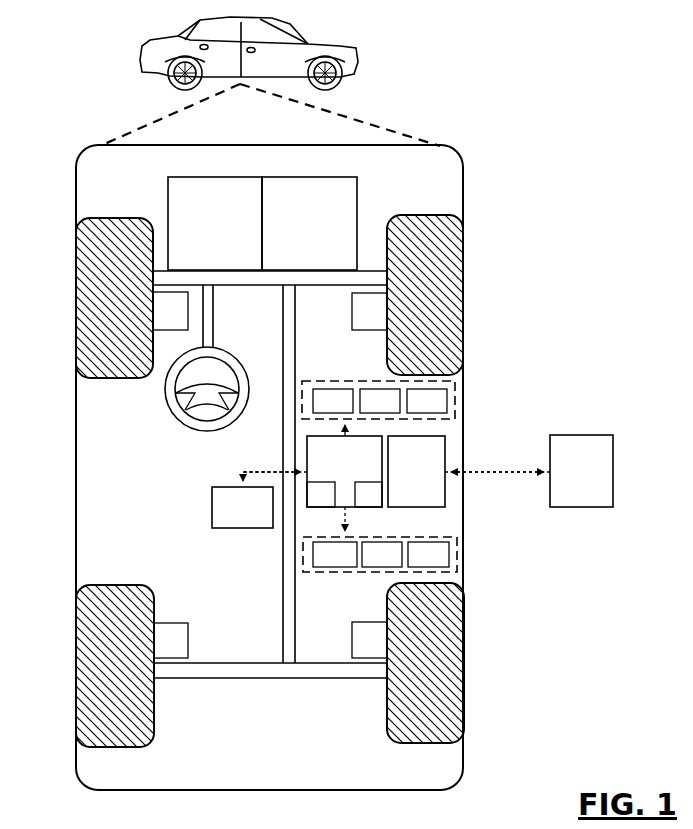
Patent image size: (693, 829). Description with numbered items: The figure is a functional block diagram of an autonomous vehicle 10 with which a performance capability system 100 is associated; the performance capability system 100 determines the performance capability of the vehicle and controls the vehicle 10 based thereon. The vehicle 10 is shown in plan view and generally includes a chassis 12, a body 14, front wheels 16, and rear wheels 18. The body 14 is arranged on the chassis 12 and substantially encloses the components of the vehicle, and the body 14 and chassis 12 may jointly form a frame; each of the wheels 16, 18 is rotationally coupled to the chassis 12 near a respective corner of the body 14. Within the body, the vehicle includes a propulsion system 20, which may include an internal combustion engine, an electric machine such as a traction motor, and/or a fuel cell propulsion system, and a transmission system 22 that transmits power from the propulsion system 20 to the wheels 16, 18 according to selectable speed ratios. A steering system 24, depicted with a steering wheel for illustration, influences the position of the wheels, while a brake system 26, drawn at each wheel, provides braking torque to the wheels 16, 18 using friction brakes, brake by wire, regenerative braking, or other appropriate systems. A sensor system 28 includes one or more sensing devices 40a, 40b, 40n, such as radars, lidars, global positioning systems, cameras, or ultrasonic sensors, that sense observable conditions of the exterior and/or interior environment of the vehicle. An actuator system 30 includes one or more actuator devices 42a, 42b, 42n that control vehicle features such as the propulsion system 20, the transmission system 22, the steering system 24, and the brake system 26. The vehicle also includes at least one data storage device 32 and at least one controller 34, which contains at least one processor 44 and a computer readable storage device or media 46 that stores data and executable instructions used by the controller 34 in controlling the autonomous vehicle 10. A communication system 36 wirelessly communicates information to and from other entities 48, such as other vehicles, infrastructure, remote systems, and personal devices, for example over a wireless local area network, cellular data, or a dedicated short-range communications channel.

The vehicle 10 is at (138, 62).
The performance capability system 100 is at (483, 156).
The chassis 12 is at (283, 606).
The body 14 is at (76, 457).
The front wheels 16 is at (114, 219).
The rear wheels 18 is at (127, 747).
The propulsion system 20 is at (215, 223).
The transmission system 22 is at (309, 223).
The steering system 24 is at (236, 309).
The brake system 26 is at (270, 475).
The sensor system 28 is at (318, 381).
The actuator system 30 is at (337, 573).
The data storage device 32 is at (242, 507).
The controller 34 is at (312, 478).
The communication system 36 is at (469, 471).
The sensing device 40a is at (333, 401).
The sensing device 40b is at (380, 401).
The sensing device 40n is at (427, 401).
The actuator device 42a is at (335, 554).
The actuator device 42b is at (382, 554).
The actuator device 42n is at (428, 554).
The processor 44 is at (321, 494).
The computer readable storage device or media 46 is at (368, 494).
The other entities 48 is at (581, 471).